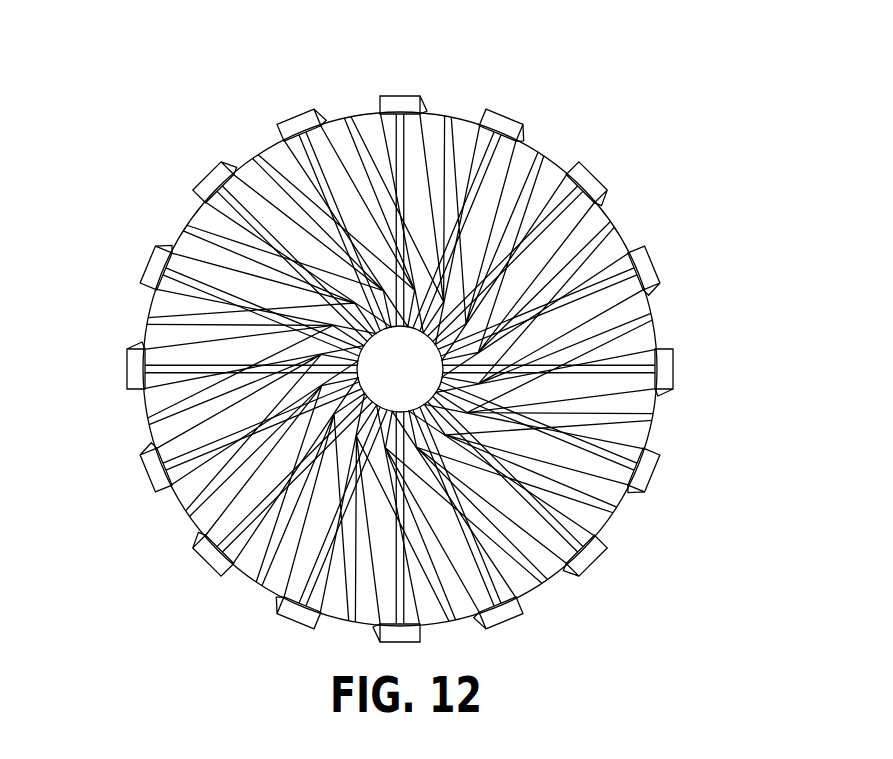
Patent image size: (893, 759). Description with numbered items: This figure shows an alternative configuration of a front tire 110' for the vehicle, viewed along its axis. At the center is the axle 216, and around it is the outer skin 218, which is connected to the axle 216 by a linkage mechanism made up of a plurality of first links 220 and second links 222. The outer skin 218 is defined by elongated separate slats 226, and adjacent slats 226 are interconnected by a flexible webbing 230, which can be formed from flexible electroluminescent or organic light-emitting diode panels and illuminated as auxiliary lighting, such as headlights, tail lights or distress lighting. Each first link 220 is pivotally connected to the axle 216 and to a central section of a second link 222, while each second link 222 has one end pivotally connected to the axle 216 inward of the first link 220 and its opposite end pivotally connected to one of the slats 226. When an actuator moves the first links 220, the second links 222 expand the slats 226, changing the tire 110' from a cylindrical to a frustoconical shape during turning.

The front tire 110' is at (405, 343).
The axle 216 is at (400, 370).
The outer skin 218 is at (657, 276).
The first link 220 is at (357, 258).
The second link 222 is at (400, 168).
The slat 226 is at (214, 166).
The flexible webbing 230 is at (186, 223).